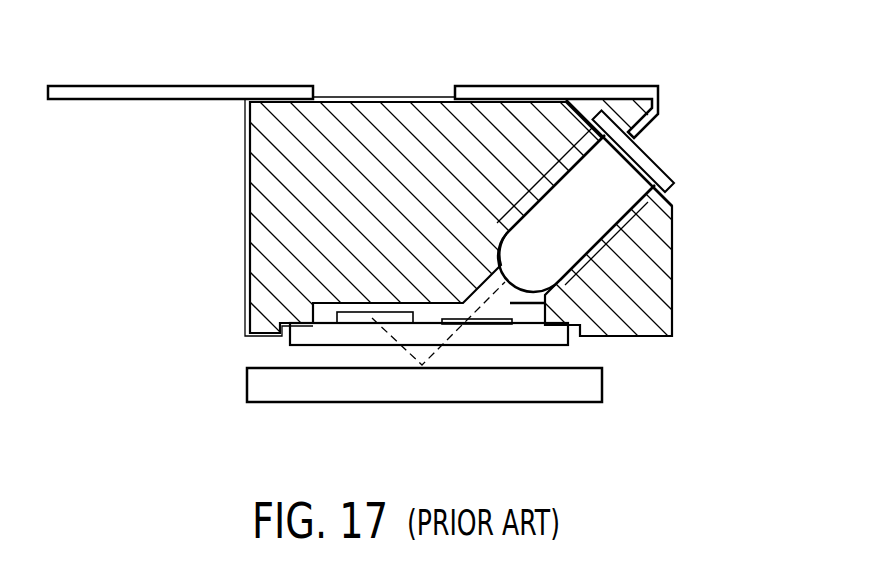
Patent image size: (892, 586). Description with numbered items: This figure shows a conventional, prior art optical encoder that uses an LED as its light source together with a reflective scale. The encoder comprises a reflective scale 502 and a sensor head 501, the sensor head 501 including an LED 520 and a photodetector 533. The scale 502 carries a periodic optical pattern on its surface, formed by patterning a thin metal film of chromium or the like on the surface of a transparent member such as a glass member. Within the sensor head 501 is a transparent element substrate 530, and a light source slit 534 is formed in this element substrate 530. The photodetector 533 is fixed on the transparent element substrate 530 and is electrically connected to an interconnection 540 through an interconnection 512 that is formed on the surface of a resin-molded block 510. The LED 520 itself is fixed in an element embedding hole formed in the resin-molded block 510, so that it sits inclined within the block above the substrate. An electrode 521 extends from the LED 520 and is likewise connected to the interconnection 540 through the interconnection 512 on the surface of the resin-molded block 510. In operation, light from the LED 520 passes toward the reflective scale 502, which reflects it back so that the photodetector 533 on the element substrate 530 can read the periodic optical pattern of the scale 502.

The sensor head 501 is at (673, 143).
The reflective scale 502 is at (593, 380).
The resin-molded block 510 is at (258, 302).
The interconnection 512 is at (383, 98).
The LED 520 is at (610, 205).
The electrode 521 is at (582, 92).
The transparent element substrate 530 is at (301, 335).
The photodetector 533 is at (367, 317).
The light source slit 534 is at (483, 325).
The interconnection 540 is at (182, 92).